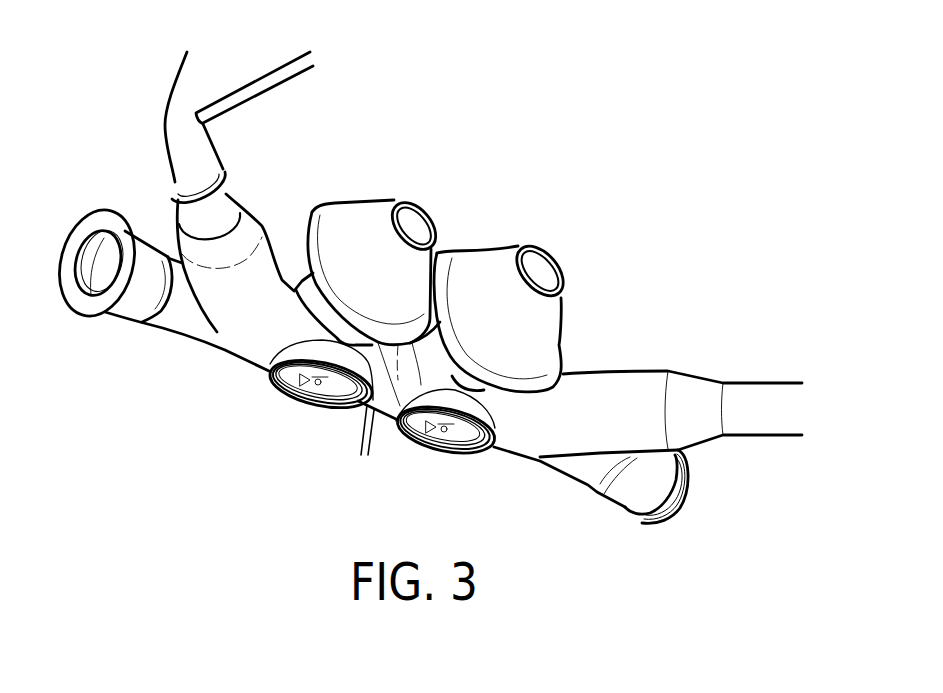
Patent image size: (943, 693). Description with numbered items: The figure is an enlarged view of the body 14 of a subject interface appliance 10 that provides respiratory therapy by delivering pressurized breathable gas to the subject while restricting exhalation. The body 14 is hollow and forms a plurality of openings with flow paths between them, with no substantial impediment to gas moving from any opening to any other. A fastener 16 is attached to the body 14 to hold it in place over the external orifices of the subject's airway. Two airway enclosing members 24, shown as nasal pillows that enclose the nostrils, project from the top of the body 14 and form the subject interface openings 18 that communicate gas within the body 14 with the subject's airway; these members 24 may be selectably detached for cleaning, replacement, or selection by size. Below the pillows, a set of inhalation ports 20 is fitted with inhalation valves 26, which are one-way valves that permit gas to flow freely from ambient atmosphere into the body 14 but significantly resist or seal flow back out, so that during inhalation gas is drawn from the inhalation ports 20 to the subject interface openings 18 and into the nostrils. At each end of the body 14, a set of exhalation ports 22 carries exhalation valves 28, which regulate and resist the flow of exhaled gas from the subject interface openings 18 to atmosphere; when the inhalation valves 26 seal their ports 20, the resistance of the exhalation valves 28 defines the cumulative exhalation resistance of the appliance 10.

The subject interface appliance 10 is at (158, 471).
The body 14 is at (254, 352).
The fastener 16 is at (273, 88).
The subject interface openings 18 is at (417, 220).
The inhalation ports 20 is at (365, 442).
The exhalation ports 22 is at (148, 252).
The airway enclosing members 24 is at (370, 203).
The inhalation valves 26 is at (309, 395).
The exhalation valves 28 is at (99, 255).